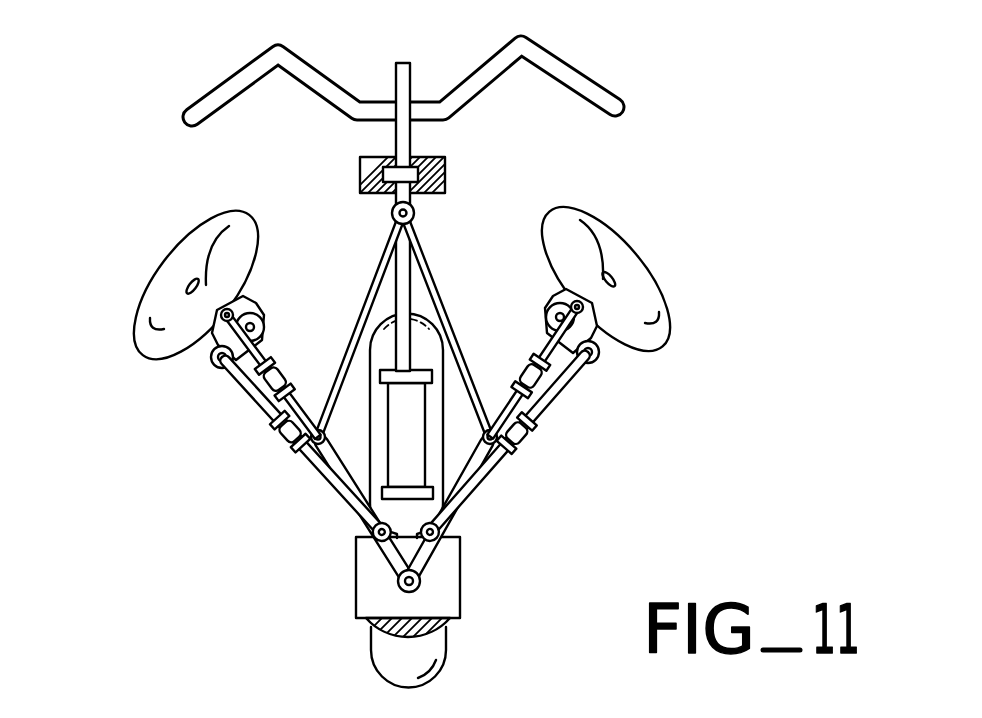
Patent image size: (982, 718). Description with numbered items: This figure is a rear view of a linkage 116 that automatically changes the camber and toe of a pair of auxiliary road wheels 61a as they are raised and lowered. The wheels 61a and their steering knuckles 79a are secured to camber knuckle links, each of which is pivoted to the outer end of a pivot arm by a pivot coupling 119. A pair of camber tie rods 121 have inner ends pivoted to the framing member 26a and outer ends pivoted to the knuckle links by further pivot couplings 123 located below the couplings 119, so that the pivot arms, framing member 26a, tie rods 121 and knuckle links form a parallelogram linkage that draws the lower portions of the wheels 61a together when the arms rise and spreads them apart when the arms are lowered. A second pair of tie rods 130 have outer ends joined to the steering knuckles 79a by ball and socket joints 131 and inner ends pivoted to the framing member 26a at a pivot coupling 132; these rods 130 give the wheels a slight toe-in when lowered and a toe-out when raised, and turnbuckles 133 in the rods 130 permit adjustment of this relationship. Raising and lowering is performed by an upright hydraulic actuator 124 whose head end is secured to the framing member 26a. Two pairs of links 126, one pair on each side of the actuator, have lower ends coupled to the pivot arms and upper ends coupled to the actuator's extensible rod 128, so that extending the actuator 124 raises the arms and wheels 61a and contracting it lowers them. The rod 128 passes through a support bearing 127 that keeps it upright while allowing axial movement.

The framing member 26a is at (447, 163).
The auxiliary road wheels 61a is at (238, 213).
The steering knuckles 79a is at (243, 297).
The linkage 116 is at (262, 459).
The pivot couplings 119 is at (262, 323).
The tie rods 121 is at (258, 412).
The pivot couplings 123 is at (213, 367).
The hydraulic actuator 124 is at (397, 442).
The links 126 is at (432, 263).
The support bearing 127 is at (445, 175).
The extensible rod 128 is at (395, 63).
The tie rods 130 is at (352, 519).
The ball and socket joints 131 is at (220, 317).
The pivot coupling 132 is at (398, 588).
The turnbuckles 133 is at (258, 397).